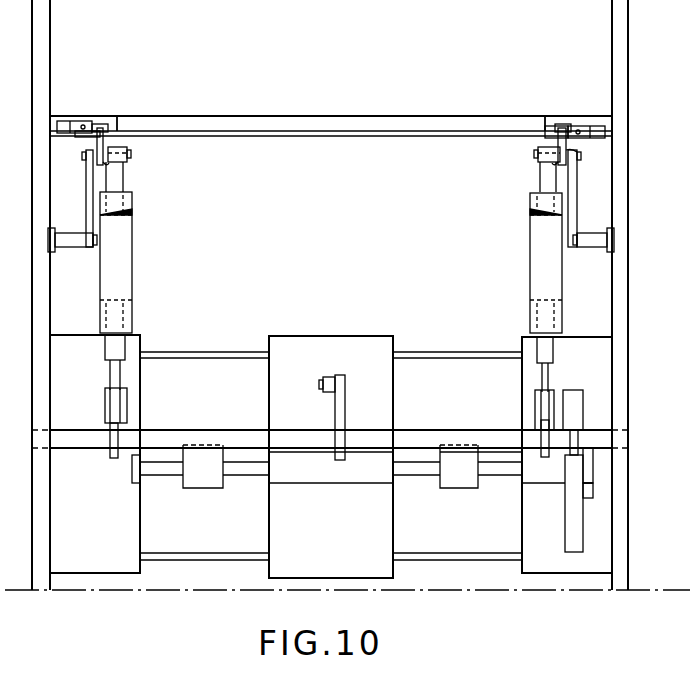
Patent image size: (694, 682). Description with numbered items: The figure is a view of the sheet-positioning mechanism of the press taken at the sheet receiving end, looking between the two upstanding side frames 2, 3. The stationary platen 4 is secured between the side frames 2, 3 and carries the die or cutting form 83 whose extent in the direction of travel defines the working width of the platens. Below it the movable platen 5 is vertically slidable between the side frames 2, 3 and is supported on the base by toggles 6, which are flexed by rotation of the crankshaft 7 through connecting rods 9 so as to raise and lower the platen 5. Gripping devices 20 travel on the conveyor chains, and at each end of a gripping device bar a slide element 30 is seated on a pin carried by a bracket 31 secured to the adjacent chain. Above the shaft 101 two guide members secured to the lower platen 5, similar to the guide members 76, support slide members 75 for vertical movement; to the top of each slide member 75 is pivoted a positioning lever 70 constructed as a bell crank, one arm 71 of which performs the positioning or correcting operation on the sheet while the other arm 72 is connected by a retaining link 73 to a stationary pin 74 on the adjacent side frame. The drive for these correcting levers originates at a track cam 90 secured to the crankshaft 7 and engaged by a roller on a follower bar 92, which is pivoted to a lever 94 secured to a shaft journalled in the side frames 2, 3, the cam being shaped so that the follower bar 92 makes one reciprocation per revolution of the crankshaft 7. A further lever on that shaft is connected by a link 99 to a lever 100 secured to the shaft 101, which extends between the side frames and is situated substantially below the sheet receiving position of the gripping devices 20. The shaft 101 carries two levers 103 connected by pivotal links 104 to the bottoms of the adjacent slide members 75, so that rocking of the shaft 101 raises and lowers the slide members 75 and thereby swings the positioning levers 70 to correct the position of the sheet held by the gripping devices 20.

The side frame 2 is at (50, 58).
The side frame 3 is at (612, 53).
The stationary platen 4 is at (321, 52).
The movable platen 5 is at (331, 248).
The toggles 6 is at (150, 522).
The crankshaft 7 is at (325, 484).
The connecting rods 9 is at (205, 480).
The gripping devices 20 is at (203, 131).
The slide element 30 is at (85, 135).
The bracket 31 is at (80, 121).
The positioning lever 70 is at (103, 124).
The arm 71 is at (100, 128).
The arm 72 is at (106, 163).
The retaining link 73 is at (86, 180).
The stationary pin 74 is at (97, 240).
The slide member 75 is at (132, 182).
The guide member 76 is at (132, 312).
The die or cutting form 83 is at (343, 124).
The track cam 90 is at (575, 390).
The follower bar 92 is at (588, 487).
The lever 94 is at (575, 462).
The link 99 is at (322, 386).
The lever 100 is at (345, 408).
The shaft 101 is at (77, 448).
The levers 103 is at (112, 459).
The pivotal links 104 is at (106, 404).